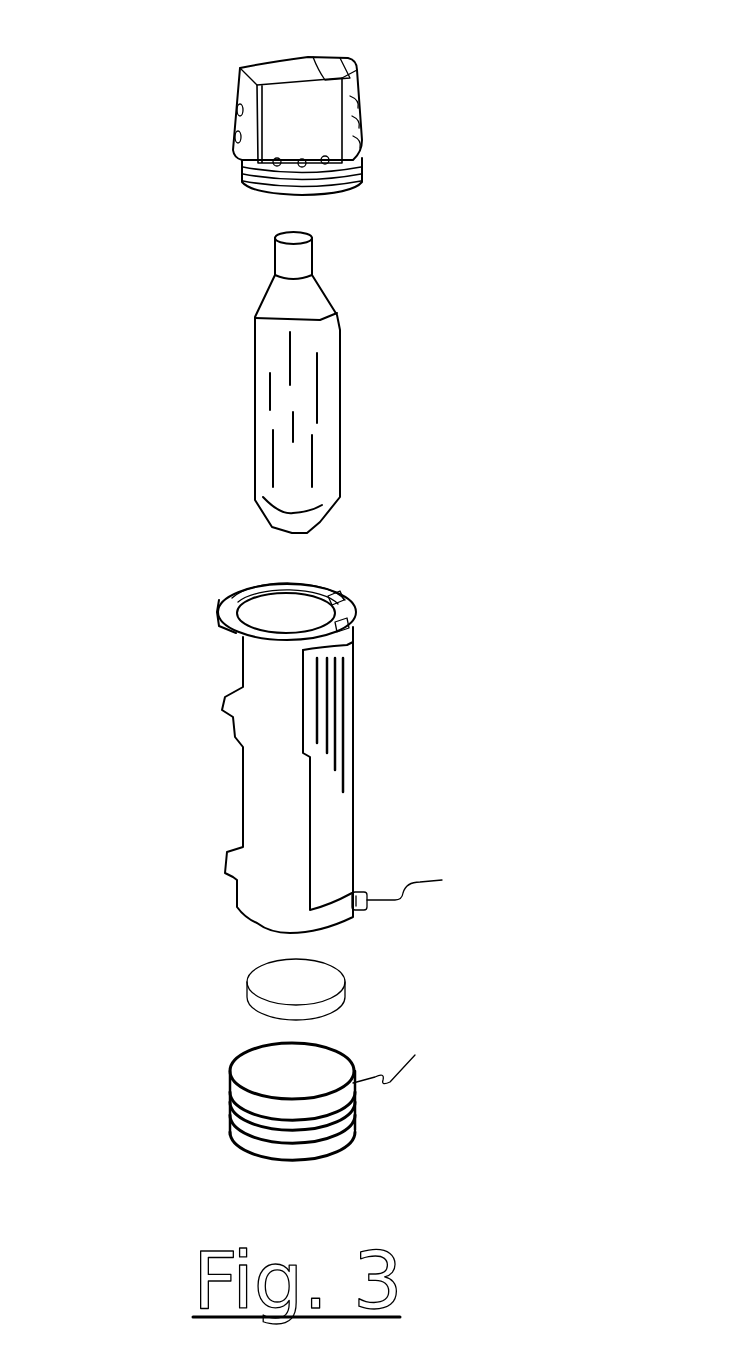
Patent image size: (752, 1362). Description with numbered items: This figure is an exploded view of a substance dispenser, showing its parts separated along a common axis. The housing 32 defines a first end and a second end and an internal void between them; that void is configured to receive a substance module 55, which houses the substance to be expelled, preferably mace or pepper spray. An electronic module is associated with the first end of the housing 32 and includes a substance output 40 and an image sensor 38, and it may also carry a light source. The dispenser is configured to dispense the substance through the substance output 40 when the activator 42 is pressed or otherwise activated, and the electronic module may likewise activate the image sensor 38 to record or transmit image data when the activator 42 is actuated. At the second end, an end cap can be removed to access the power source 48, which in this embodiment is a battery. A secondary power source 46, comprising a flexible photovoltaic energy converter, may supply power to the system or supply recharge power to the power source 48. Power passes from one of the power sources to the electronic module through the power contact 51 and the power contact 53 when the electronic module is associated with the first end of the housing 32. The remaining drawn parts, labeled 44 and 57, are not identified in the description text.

The housing 32 is at (258, 788).
The image sensor 38 is at (237, 103).
The substance output 40 is at (232, 138).
The activator 42 is at (358, 90).
The dispensing openings 44 is at (318, 143).
The secondary power source 46 is at (345, 837).
The power source 48 is at (245, 1138).
The power contact 51 is at (337, 588).
The power contact 53 is at (355, 602).
The substance module 55 is at (260, 398).
The disc 57 is at (250, 1003).